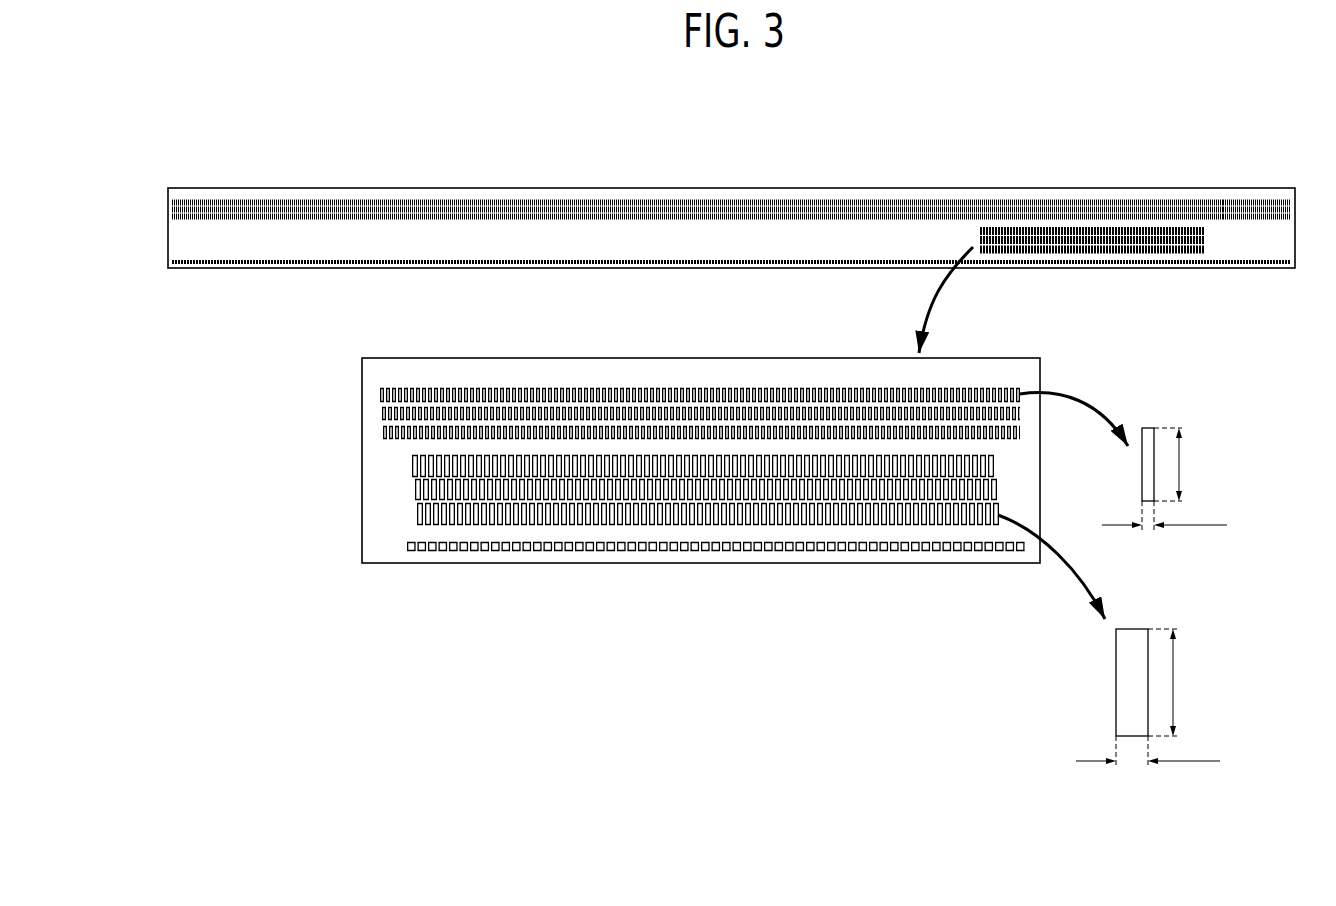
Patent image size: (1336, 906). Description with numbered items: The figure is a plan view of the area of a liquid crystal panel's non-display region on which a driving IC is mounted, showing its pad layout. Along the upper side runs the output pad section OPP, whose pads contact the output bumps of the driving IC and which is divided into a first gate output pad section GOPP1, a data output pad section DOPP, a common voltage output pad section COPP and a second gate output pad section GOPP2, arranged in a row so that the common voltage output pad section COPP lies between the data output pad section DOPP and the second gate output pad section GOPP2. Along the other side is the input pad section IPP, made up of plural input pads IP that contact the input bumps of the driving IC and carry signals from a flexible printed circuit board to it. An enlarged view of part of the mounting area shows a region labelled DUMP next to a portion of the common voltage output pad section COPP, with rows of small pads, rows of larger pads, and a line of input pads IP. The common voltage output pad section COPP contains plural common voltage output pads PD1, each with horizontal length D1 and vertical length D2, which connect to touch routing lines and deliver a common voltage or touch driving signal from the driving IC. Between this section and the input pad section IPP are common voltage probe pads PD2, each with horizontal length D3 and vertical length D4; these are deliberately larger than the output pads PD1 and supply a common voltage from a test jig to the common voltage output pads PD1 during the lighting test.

The output pad section OPP is at (205, 143).
The first gate output pad section GOPP1 is at (168, 183).
The data output pad section DOPP is at (962, 183).
The common voltage output pad section COPP is at (962, 183).
The second gate output pad section GOPP2 is at (1223, 183).
The input pad section IPP is at (1295, 273).
The dummy pad part DUMP is at (380, 349).
The input pad IP is at (1020, 552).
The common voltage output pad PD1 is at (1146, 428).
The common voltage probe pad PD2 is at (1133, 637).
The horizontal length of common voltage output pad D1 is at (1164, 515).
The vertical length of common voltage output pad D2 is at (1180, 464).
The horizontal length of common voltage probe pad D3 is at (1148, 750).
The vertical length of common voltage probe pad D4 is at (1176, 682).